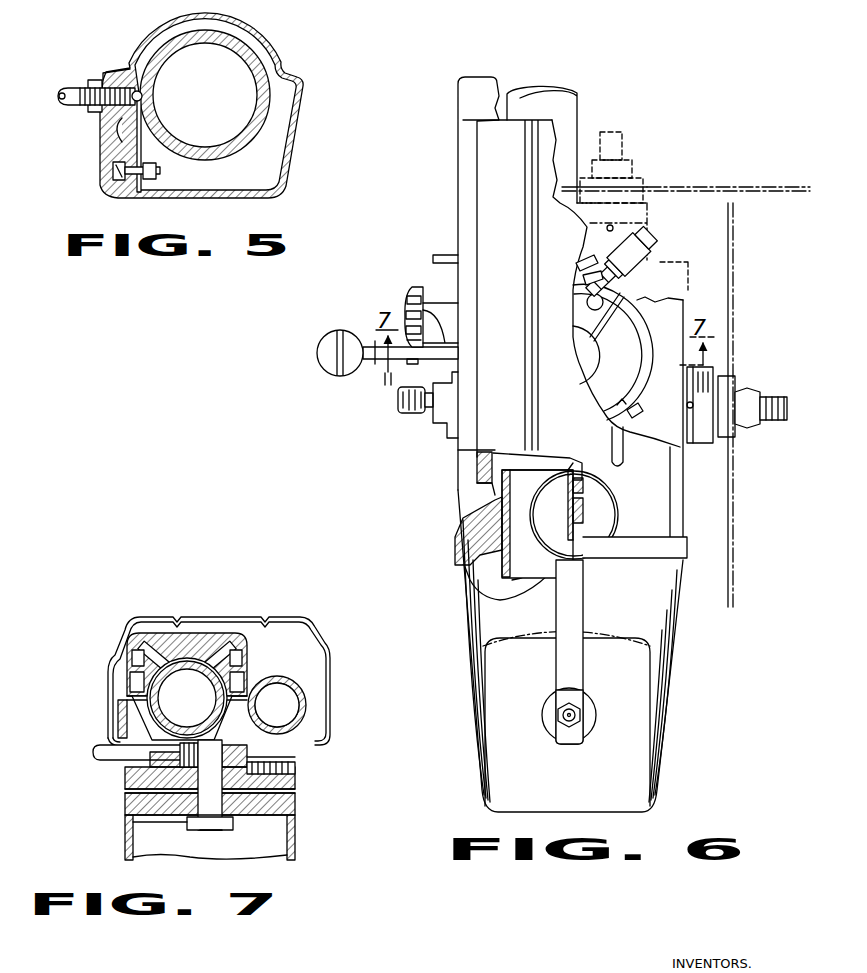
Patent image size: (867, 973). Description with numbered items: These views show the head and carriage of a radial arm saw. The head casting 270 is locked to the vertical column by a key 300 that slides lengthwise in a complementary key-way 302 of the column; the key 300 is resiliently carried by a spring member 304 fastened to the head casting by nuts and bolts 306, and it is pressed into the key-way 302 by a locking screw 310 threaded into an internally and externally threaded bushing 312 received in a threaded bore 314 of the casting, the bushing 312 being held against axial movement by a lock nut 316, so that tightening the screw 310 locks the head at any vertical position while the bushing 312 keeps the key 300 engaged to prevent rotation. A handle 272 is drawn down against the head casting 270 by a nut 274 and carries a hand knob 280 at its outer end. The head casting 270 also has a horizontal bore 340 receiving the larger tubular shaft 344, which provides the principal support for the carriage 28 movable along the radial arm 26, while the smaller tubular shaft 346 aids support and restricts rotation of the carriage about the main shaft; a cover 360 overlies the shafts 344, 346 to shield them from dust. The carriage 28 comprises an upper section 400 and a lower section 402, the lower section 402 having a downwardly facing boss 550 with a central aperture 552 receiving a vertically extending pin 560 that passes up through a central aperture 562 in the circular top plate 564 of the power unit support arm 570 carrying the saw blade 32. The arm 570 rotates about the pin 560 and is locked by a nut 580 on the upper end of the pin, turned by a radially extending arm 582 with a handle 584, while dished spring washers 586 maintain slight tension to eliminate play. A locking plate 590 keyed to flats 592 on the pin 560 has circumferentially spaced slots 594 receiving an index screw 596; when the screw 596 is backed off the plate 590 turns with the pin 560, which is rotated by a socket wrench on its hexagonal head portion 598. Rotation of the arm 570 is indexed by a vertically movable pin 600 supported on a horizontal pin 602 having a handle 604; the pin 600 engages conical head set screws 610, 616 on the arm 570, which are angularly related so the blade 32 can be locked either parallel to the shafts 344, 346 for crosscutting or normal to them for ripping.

In FIG. 6, the radial arm 26 is at (455, 184).
In FIG. 7, the radial arm 26 is at (273, 619).
In FIG. 7, the carriage 28 is at (194, 632).
In FIG. 6, the saw blade 32 is at (736, 588).
In FIG. 5, the head casting 270 is at (309, 92).
In FIG. 6, the head casting 270 is at (688, 701).
In FIG. 6, the handle 272 is at (590, 607).
In FIG. 6, the nut 274 is at (579, 709).
In FIG. 6, the hand knob 280 is at (612, 503).
In FIG. 5, the key 300 is at (137, 89).
In FIG. 5, the key-way 302 is at (143, 98).
In FIG. 5, the spring member 304 is at (137, 125).
In FIG. 5, the nuts and bolts 306 is at (114, 176).
In FIG. 5, the locking screw 310 is at (63, 92).
In FIG. 5, the bushing 312 is at (78, 113).
In FIG. 5, the threaded bore 314 is at (108, 78).
In FIG. 5, the lock nut 316 is at (90, 121).
In FIG. 6, the horizontal bore 340 is at (462, 527).
In FIG. 6, the tubular shaft 344 is at (583, 114).
In FIG. 7, the tubular shaft 344 is at (166, 714).
In FIG. 7, the tubular shaft 346 is at (310, 695).
In FIG. 6, the cover 360 is at (500, 142).
In FIG. 7, the cover 360 is at (331, 650).
In FIG. 7, the upper section 400 is at (233, 657).
In FIG. 6, the lower section 402 is at (428, 362).
In FIG. 7, the lower section 402 is at (120, 781).
In FIG. 7, the boss 550 is at (298, 770).
In FIG. 7, the central aperture 552 is at (241, 763).
In FIG. 7, the pin 560 is at (180, 832).
In FIG. 7, the central aperture 562 is at (262, 840).
In FIG. 7, the top plate 564 is at (290, 811).
In FIG. 7, the power unit support arm 570 is at (300, 841).
In FIG. 7, the nut 580 is at (236, 742).
In FIG. 6, the arm 582 is at (378, 360).
In FIG. 7, the arm 582 is at (97, 745).
In FIG. 6, the handle 584 is at (328, 359).
In FIG. 7, the spring washers 586 is at (182, 822).
In FIG. 7, the locking plate 590 is at (185, 791).
In FIG. 7, the flats 592 is at (205, 796).
In FIG. 7, the slots 594 is at (298, 789).
In FIG. 7, the index screw 596 is at (300, 763).
In FIG. 7, the hexagonal head portion 598 is at (208, 832).
In FIG. 6, the pin 600 is at (583, 308).
In FIG. 6, the pin 602 is at (588, 268).
In FIG. 6, the handle 604 is at (636, 262).
In FIG. 6, the set screw 610 is at (586, 277).
In FIG. 6, the set screw 616 is at (636, 408).